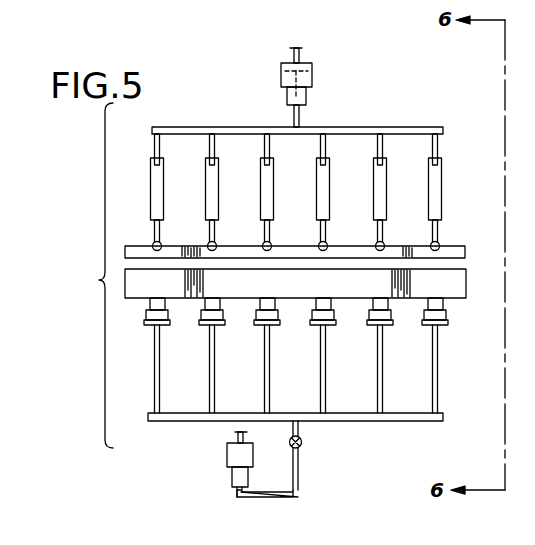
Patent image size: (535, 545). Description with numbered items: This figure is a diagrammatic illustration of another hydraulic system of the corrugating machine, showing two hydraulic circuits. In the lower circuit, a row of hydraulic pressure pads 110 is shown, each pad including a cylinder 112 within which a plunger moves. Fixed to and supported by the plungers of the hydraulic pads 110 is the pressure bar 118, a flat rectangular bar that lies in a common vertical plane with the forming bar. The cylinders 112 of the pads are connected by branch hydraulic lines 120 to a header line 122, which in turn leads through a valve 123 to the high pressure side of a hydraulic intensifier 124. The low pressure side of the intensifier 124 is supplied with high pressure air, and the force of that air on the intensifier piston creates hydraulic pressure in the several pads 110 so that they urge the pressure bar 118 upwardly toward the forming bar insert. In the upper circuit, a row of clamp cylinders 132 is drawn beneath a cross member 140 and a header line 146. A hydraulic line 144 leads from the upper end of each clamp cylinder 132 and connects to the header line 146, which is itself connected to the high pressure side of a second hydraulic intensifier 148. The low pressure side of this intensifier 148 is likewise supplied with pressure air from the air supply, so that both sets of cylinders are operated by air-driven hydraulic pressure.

The hydraulic pressure pad 110 is at (296, 317).
The cylinder 112 is at (202, 327).
The pressure bar 118 is at (466, 285).
The branch hydraulic line 120 is at (212, 393).
The header line 122 is at (332, 418).
The valve 123 is at (300, 448).
The hydraulic intensifier 124 is at (233, 460).
The clamp cylinder 132 is at (296, 192).
The cross bar 140 is at (465, 251).
The hydraulic line 144 is at (268, 150).
The header line 146 is at (405, 127).
The hydraulic intensifier 148 is at (312, 83).